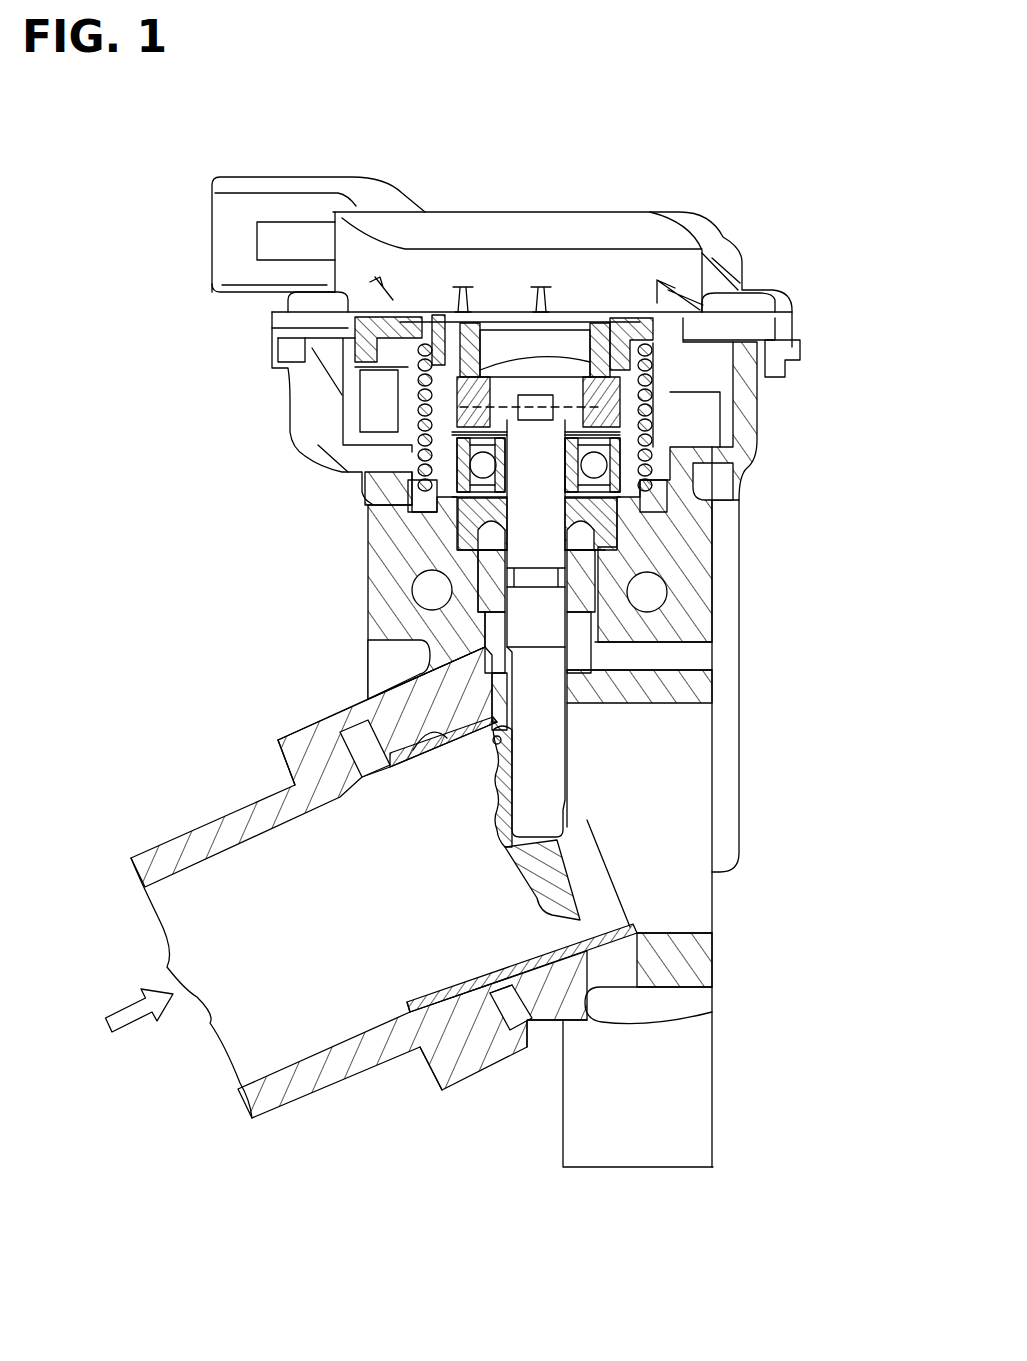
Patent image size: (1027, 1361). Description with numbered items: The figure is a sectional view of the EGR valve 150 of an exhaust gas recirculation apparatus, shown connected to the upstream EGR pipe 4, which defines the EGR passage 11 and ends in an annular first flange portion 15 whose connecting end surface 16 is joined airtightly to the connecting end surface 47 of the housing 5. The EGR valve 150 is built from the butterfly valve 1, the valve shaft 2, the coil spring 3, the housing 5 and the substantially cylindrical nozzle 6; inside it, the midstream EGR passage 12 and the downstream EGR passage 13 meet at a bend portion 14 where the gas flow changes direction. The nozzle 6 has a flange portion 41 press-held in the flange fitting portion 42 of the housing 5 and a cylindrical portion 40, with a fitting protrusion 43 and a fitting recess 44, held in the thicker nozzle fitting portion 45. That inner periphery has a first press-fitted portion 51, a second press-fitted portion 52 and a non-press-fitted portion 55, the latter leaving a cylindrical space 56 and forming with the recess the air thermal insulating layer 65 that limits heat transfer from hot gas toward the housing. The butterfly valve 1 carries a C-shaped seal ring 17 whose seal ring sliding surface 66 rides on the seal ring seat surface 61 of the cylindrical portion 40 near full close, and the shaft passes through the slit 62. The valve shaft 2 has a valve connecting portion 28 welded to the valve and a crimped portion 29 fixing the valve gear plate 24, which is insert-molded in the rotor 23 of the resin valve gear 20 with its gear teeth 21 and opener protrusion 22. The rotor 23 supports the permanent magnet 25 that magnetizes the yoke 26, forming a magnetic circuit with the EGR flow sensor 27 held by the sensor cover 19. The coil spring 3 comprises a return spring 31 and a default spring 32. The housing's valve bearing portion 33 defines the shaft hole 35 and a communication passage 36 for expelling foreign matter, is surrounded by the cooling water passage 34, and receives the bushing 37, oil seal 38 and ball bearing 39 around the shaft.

The butterfly valve 1 is at (710, 883).
The valve shaft 2 is at (710, 642).
The coil spring 3 is at (650, 446).
The upstream EGR pipe 4 is at (177, 833).
The housing 5 is at (722, 1165).
The nozzle 6 is at (708, 948).
The EGR passage 11 is at (240, 1027).
The midstream EGR passage 12 is at (410, 873).
The downstream EGR passage 13 is at (690, 772).
The bend portion 14 is at (640, 925).
The first flange portion 15 is at (290, 757).
The connecting end surface 16 is at (340, 712).
The seal ring 17 is at (713, 987).
The sensor cover 19 is at (633, 210).
The valve gear 20 is at (320, 375).
The gear teeth 21 is at (320, 331).
The opener protrusion 22 is at (335, 406).
The rotor 23 is at (445, 388).
The valve gear plate 24 is at (497, 397).
The permanent magnet 25 is at (453, 343).
The yoke 26 is at (541, 299).
The EGR flow sensor 27 is at (550, 345).
The valve connecting portion 28 is at (660, 817).
The crimped portion 29 is at (653, 363).
The return spring 31 is at (653, 452).
The default spring 32 is at (653, 400).
The valve bearing portion 33 is at (412, 492).
The cooling water passage 34 is at (650, 590).
The shaft hole 35 is at (470, 632).
The communication passage 36 is at (697, 660).
The bushing 37 is at (605, 603).
The oil seal 38 is at (617, 532).
The ball bearing 39 is at (705, 505).
The cylindrical portion 40 is at (395, 822).
The flange portion 41 is at (430, 1068).
The flange fitting portion 42 is at (500, 1053).
The fitting protrusion 43 is at (497, 970).
The fitting recess 44 is at (565, 1030).
The nozzle fitting portion 45 is at (700, 1028).
The connecting end surface 47 is at (335, 712).
The first press-fitted portion 51 is at (465, 1010).
The second press-fitted portion 52 is at (462, 990).
The non-press-fitted portion 55 is at (650, 922).
The cylindrical space 56 is at (713, 1003).
The seal ring seat surface 61 is at (400, 833).
The slit 62 is at (660, 740).
The air thermal insulating layer 65 is at (393, 780).
The seal ring sliding surface 66 is at (705, 702).
The EGR valve 150 is at (760, 198).